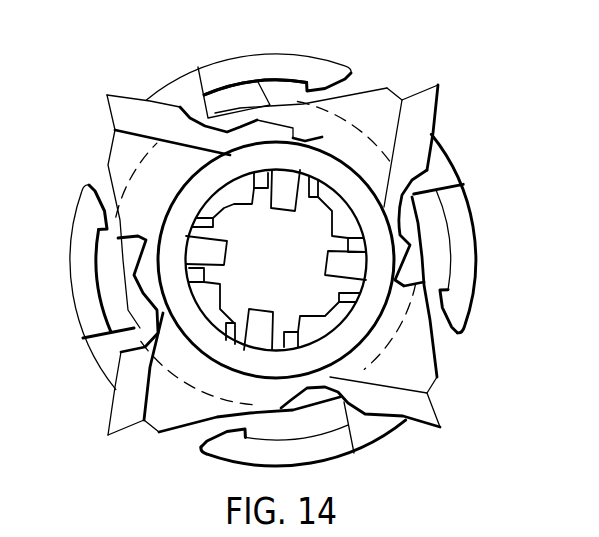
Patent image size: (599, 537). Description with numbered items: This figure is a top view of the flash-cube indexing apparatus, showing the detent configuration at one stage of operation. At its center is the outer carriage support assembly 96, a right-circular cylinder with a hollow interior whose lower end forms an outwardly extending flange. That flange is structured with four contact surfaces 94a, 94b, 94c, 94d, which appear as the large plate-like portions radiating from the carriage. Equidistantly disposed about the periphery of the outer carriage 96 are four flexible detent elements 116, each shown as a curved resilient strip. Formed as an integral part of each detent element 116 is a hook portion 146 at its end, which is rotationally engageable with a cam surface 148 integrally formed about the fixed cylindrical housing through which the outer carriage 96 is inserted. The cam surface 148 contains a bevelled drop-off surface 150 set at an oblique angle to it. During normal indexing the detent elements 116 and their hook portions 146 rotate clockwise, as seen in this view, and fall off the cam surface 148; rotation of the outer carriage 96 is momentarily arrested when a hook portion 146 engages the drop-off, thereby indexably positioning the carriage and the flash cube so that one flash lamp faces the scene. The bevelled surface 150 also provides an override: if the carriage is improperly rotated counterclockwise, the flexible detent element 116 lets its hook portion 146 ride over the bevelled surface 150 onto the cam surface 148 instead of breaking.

The outer carriage support assembly 96 is at (477, 154).
The contact surface 94a is at (430, 98).
The contact surface 94b is at (133, 63).
The contact surface 94c is at (115, 418).
The contact surface 94d is at (437, 414).
The detent element 116 is at (268, 64).
The hook portion 146 is at (332, 84).
The cam surface 148 is at (217, 100).
The bevelled drop-off surface 150 is at (282, 82).